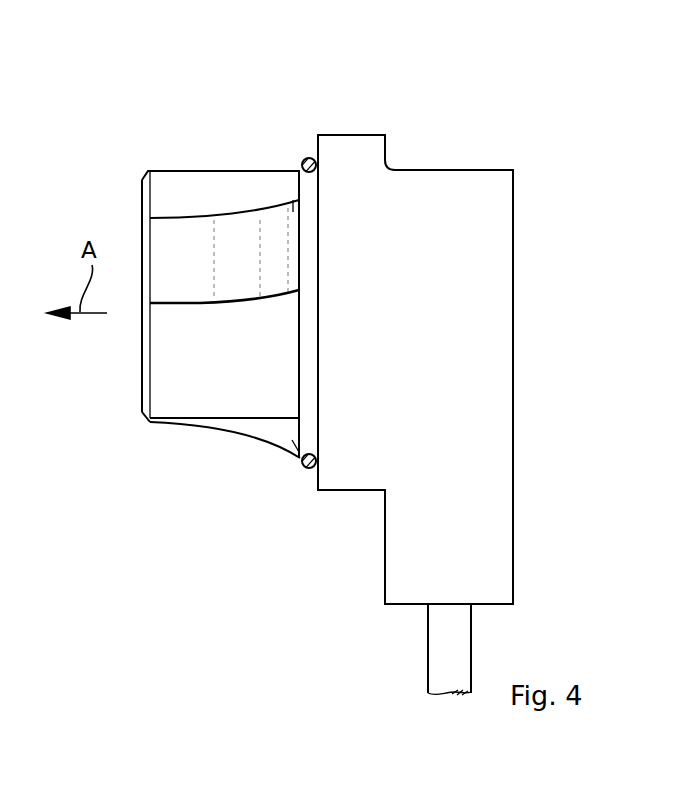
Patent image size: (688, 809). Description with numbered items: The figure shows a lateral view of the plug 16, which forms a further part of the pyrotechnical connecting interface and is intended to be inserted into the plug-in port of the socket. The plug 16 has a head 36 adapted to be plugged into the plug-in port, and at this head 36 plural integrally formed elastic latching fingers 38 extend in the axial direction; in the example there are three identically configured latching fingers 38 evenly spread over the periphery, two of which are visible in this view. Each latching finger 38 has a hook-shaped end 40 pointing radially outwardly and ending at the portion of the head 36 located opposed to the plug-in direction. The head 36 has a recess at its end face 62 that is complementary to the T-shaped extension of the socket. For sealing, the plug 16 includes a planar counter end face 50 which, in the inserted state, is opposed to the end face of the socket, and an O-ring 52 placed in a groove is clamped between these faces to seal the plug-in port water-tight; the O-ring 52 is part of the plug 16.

The plug 16 is at (386, 115).
The counter end face 50 is at (316, 150).
The O-ring 52 is at (307, 155).
The end face 62 is at (140, 352).
The head 36 is at (295, 503).
The latching fingers 38 is at (191, 228).
The hook-shaped end 40 is at (293, 210).